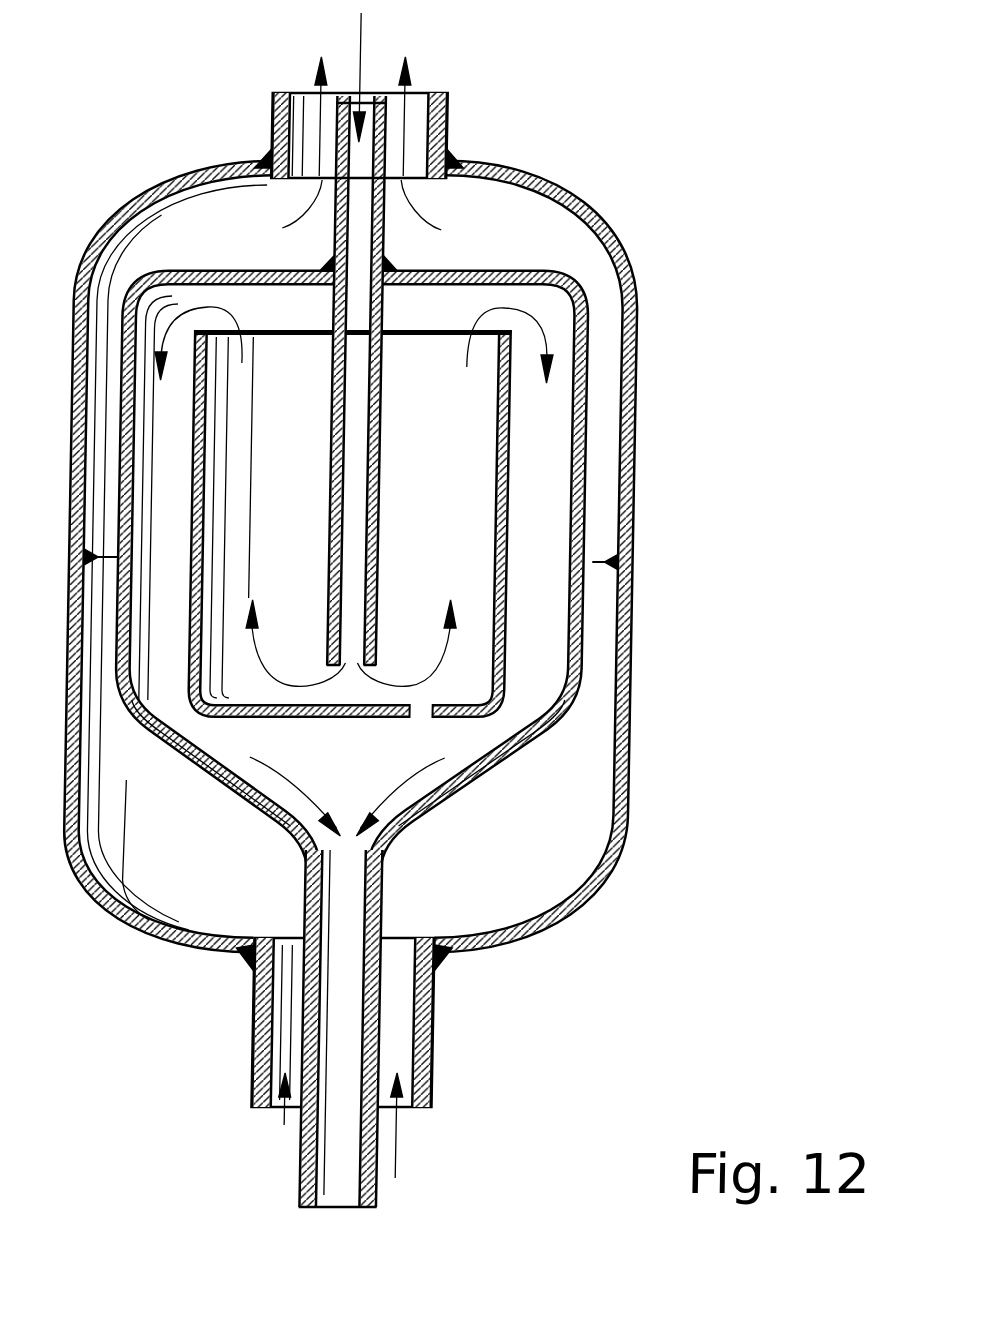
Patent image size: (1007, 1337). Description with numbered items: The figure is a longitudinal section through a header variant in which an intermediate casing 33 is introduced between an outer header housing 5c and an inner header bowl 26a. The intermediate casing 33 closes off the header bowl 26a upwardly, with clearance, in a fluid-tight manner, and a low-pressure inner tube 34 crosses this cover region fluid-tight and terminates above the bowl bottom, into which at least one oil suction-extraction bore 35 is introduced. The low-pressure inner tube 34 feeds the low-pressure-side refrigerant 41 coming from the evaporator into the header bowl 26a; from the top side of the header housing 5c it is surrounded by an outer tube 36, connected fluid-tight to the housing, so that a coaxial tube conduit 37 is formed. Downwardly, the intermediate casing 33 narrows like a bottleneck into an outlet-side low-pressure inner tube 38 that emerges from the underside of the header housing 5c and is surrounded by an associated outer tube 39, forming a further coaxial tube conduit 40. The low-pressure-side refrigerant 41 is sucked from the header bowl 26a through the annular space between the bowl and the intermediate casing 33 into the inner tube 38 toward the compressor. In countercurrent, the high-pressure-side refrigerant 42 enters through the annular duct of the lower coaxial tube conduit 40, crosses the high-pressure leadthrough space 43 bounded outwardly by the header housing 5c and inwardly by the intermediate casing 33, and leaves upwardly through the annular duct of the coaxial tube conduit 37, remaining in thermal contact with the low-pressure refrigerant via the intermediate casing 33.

The header housing 5c is at (629, 433).
The header bowl 26a is at (515, 485).
The intermediate casing 33 is at (593, 607).
The low-pressure inner tube 34 is at (385, 423).
The oil suction-extraction bore 35 is at (425, 712).
The outer tube 36 is at (440, 132).
The coaxial tube conduit 37 is at (411, 103).
The outlet-side low-pressure inner tube 38 is at (384, 1067).
The outer tube 39 is at (446, 1012).
The coaxial tube conduit 40 is at (280, 1010).
The low-pressure-side refrigerant 41 is at (356, 26).
The high-pressure-side refrigerant 42 is at (412, 1143).
The high-pressure leadthrough space 43 is at (605, 663).